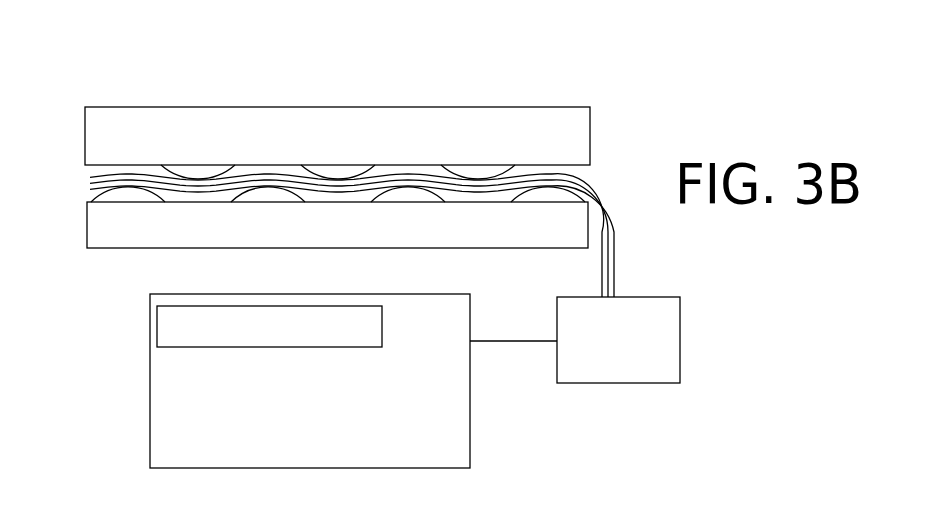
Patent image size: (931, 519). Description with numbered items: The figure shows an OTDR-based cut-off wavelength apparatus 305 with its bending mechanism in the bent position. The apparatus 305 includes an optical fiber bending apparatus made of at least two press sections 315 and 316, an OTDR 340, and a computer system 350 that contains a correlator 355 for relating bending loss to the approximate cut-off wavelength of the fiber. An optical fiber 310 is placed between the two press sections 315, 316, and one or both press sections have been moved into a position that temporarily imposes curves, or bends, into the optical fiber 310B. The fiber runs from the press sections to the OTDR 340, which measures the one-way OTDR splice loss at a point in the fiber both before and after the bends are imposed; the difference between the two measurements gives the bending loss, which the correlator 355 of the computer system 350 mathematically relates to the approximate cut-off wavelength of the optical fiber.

The OTDR-based cut-off wavelength apparatus 305 is at (246, 77).
The optical fiber 310 is at (380, 222).
The optical fiber with imposed bends 310B is at (90, 183).
The press section 315 is at (148, 107).
The press section 316 is at (152, 253).
The OTDR 340 is at (680, 339).
The computer system 350 is at (470, 379).
The correlator 355 is at (157, 328).